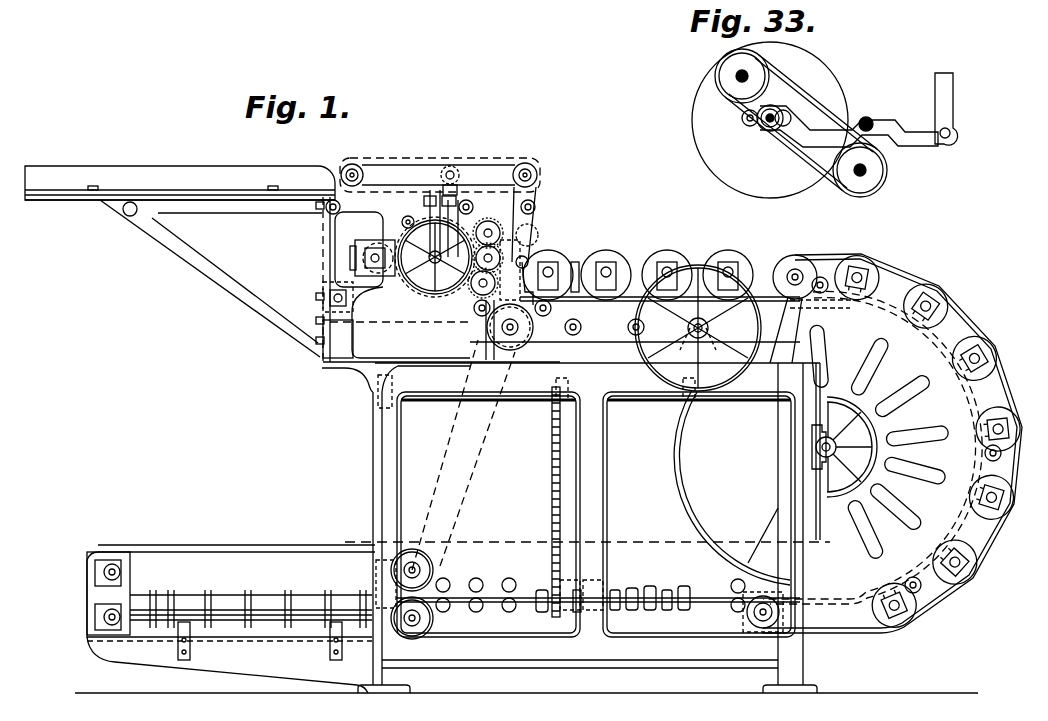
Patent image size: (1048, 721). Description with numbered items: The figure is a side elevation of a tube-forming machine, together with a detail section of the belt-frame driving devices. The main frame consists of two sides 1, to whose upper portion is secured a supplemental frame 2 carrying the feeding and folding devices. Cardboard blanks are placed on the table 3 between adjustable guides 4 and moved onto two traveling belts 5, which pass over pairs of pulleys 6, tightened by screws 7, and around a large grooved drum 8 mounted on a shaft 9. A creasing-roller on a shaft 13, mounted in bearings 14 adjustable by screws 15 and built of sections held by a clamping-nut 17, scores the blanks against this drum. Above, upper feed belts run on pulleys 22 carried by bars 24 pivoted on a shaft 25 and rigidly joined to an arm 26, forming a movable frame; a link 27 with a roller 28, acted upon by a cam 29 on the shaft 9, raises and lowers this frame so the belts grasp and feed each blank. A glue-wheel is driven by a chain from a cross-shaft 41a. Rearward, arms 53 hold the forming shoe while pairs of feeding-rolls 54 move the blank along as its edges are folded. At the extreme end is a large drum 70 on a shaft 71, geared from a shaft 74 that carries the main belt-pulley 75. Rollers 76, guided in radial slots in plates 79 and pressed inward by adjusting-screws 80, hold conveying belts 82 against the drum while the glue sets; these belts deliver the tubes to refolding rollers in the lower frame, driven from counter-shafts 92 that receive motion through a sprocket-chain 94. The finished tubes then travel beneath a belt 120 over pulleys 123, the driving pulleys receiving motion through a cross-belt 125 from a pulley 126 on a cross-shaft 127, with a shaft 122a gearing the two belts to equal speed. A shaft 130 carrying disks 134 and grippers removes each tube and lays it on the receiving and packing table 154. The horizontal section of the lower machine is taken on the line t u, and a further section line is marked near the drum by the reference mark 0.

In FIG. 1, the sides 1 is at (589, 528).
In FIG. 1, the supplemental frame 2 is at (470, 341).
In FIG. 1, the table 3 is at (69, 197).
In FIG. 1, the guides 4 is at (180, 183).
In FIG. 1, the traveling belts 5 is at (398, 333).
In FIG. 1, the pulleys 6 is at (340, 212).
In FIG. 1, the screws 7 is at (396, 322).
In FIG. 1, the roller or drum 8 is at (420, 284).
In FIG. 33, the roller or drum 8 is at (692, 124).
In FIG. 33, the shaft 9 is at (774, 112).
In FIG. 1, the shaft 13 is at (380, 262).
In FIG. 1, the bearings 14 is at (376, 270).
In FIG. 1, the screws 15 is at (365, 256).
In FIG. 1, the clamping-nut 17 is at (370, 302).
In FIG. 1, the pulleys 22 is at (352, 164).
In FIG. 1, the bars 24 is at (440, 176).
In FIG. 1, the shaft 25 is at (533, 168).
In FIG. 1, the arm 26 is at (536, 207).
In FIG. 33, the arm 26 is at (952, 100).
In FIG. 33, the link 27 is at (849, 126).
In FIG. 33, the roller or projection 28 is at (748, 126).
In FIG. 33, the cam 29 is at (782, 128).
In FIG. 33, the cross-shaft 41a is at (736, 74).
In FIG. 1, the arms 53 is at (575, 266).
In FIG. 1, the feeding-rolls 54 is at (628, 268).
In FIG. 1, the drum or wheel 70 is at (688, 462).
In FIG. 1, the shaft 71 is at (822, 449).
In FIG. 1, the shaft 74 is at (692, 338).
In FIG. 1, the main belt-pulley 75 is at (655, 371).
In FIG. 1, the rollers 76 is at (874, 279).
In FIG. 1, the plates 79 is at (879, 443).
In FIG. 1, the adjusting-screws 80 is at (858, 268).
In FIG. 1, the conveying and holding belts 82 is at (1000, 375).
In FIG. 1, the counter-shafts 92 is at (640, 400).
In FIG. 1, the sprocket-chain 94 is at (545, 502).
In FIG. 1, the belt 120 is at (231, 613).
In FIG. 1, the shaft 122a is at (426, 570).
In FIG. 1, the pulleys 123 is at (426, 620).
In FIG. 1, the cross-belt 125 is at (474, 427).
In FIG. 1, the pulley 126 is at (525, 340).
In FIG. 1, the cross-shaft 127 is at (500, 328).
In FIG. 1, the shaft 130 is at (222, 612).
In FIG. 1, the disks 134 is at (288, 598).
In FIG. 1, the receiving and packing table 154 is at (232, 624).
In FIG. 1, the section line t u t is at (585, 541).
In FIG. 1, the section line t u is at (781, 585).
In FIG. 1, the carrier position 0 is at (925, 302).